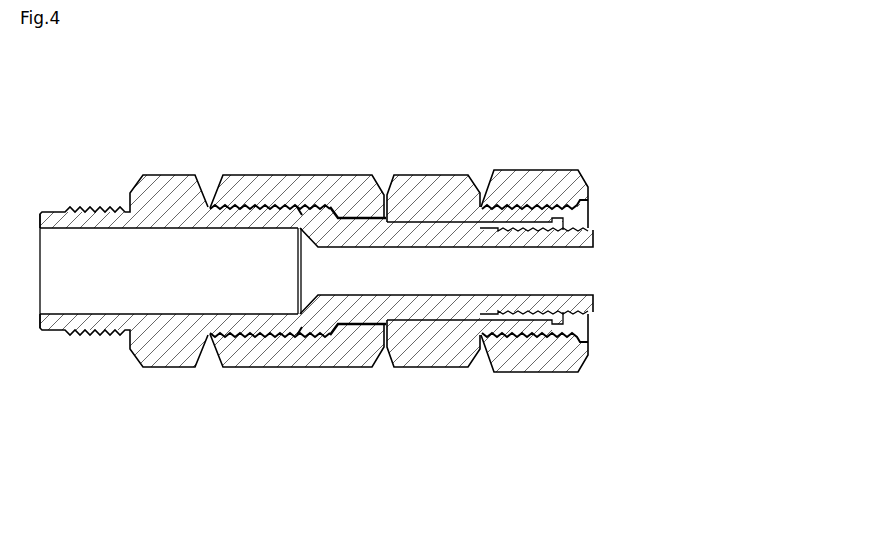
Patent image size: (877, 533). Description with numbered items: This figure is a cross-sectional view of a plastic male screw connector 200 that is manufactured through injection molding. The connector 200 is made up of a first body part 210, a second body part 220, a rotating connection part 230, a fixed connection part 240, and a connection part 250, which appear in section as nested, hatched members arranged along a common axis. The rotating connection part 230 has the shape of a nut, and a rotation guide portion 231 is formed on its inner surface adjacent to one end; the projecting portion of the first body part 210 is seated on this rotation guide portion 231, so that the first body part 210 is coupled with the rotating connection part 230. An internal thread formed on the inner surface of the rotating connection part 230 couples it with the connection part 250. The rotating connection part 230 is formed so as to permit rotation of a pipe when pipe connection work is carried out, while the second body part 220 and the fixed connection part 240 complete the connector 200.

The plastic male screw connector 200 is at (433, 290).
The first body part 210 is at (414, 241).
The second body part 220 is at (435, 374).
The rotating connection part 230 is at (320, 374).
The rotation guide portion 231 is at (336, 205).
The fixed connection part 240 is at (538, 374).
The connection part 250 is at (168, 374).